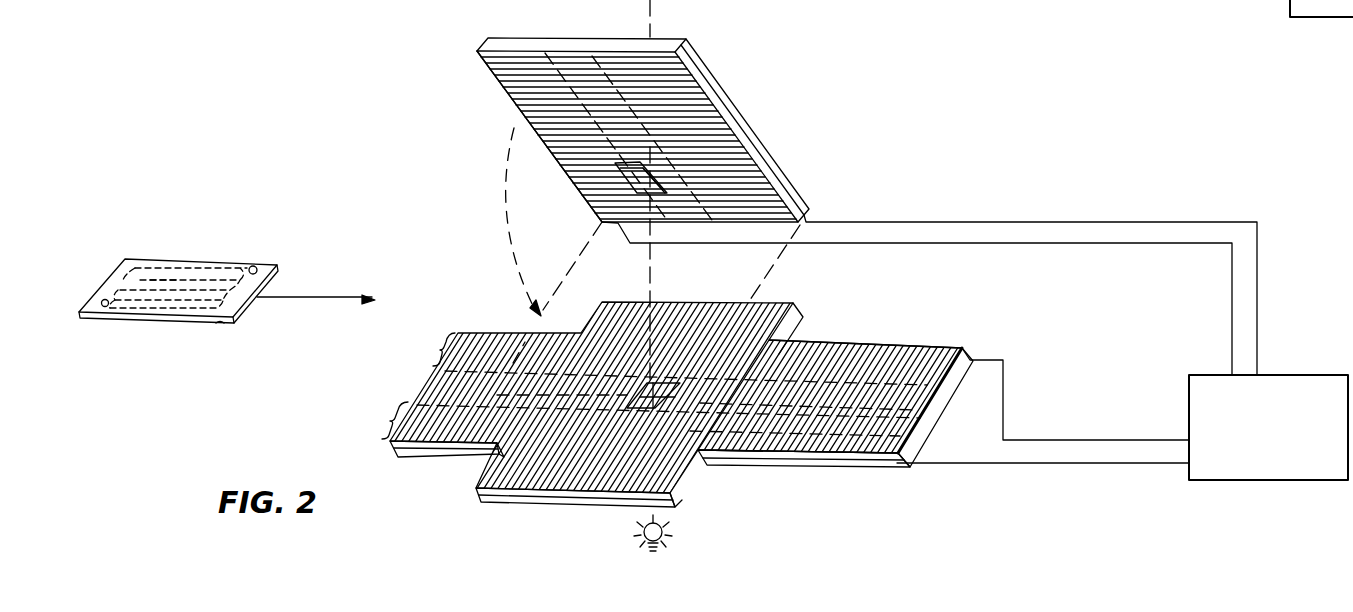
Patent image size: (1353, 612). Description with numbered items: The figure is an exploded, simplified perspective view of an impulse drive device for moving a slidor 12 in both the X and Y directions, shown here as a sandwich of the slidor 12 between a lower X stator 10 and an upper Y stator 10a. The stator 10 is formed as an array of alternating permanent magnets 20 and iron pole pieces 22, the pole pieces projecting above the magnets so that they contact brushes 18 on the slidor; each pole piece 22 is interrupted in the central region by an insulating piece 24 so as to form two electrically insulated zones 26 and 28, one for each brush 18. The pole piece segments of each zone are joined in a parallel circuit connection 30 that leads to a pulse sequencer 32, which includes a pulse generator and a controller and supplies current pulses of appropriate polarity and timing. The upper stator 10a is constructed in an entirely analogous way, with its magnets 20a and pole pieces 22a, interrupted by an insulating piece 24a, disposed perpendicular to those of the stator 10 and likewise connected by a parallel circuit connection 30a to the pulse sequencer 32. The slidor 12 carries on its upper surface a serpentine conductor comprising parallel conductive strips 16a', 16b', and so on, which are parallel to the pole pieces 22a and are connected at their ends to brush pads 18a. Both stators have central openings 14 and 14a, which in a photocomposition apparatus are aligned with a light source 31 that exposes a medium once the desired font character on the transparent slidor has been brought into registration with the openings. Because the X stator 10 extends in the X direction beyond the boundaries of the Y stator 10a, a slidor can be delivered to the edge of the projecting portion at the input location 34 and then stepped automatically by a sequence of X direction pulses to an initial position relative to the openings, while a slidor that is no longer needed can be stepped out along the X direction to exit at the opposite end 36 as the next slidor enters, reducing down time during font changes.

The stator 10 is at (570, 506).
The stator 10a is at (612, 37).
The slidor 12 is at (237, 256).
The opening 14 is at (668, 388).
The opening 14a is at (655, 150).
The conductive strip 16a' is at (178, 262).
The conductive strip 16b' is at (180, 246).
The brush 18 is at (220, 324).
The brush pad 18a is at (256, 267).
The permanent magnet 20 is at (845, 347).
The permanent magnet 20a is at (507, 83).
The pole piece 22 is at (757, 433).
The pole piece 22a is at (643, 160).
The insulating piece 24 is at (798, 403).
The insulating piece 24a is at (578, 72).
The zone 26 is at (385, 420).
The zone 28 is at (431, 349).
The parallel circuit connection 30 is at (990, 464).
The parallel circuit connection 30a is at (828, 222).
The light source 31 is at (664, 533).
The pulse sequencer 32 is at (1303, 375).
The location 34 is at (411, 387).
The opposite end 36 is at (920, 442).